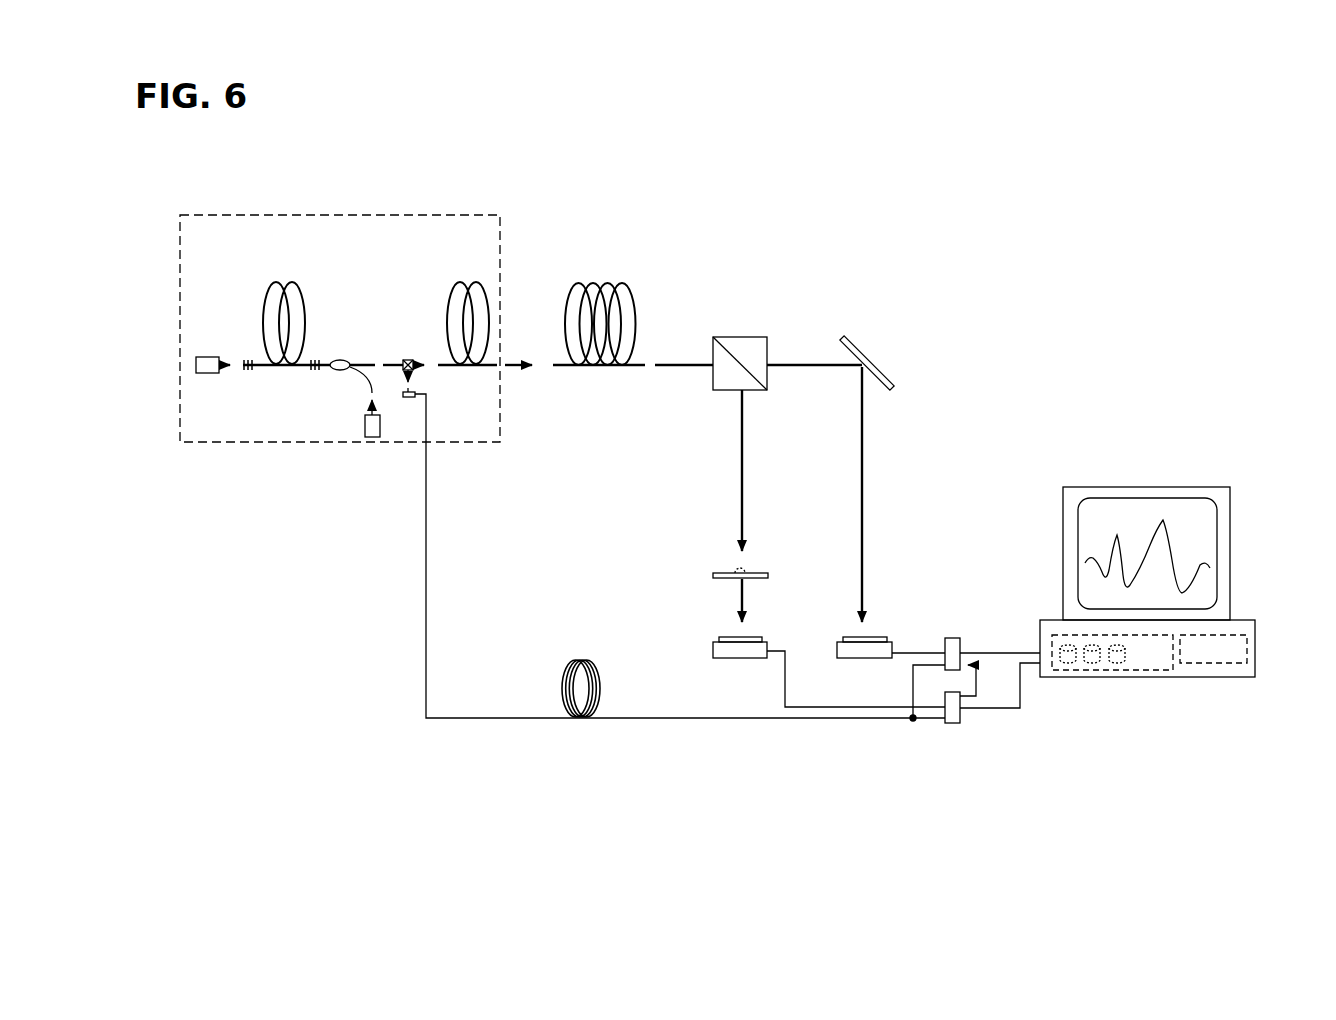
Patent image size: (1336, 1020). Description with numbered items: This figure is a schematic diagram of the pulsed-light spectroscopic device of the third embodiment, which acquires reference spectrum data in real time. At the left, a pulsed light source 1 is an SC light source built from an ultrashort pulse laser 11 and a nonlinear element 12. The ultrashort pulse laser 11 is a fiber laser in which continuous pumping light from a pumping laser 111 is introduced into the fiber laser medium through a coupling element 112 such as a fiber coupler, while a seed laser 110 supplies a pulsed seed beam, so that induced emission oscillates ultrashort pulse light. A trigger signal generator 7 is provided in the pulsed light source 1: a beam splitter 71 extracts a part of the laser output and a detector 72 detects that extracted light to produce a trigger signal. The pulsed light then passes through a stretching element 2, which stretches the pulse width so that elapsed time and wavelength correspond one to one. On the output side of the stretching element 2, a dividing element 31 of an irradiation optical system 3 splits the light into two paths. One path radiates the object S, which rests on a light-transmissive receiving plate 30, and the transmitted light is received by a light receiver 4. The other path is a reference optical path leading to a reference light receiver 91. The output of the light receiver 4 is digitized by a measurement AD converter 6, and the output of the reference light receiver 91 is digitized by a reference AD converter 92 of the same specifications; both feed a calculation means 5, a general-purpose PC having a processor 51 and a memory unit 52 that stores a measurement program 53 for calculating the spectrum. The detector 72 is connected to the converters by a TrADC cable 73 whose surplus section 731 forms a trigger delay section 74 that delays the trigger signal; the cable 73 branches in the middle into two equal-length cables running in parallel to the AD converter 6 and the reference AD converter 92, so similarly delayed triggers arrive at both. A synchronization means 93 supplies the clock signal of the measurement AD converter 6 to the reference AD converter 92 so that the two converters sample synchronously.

The pulsed light source 1 is at (352, 215).
The ultrashort pulse laser 11 is at (286, 272).
The nonlinear element 12 is at (471, 282).
The seed laser 110 is at (210, 355).
The pumping laser 111 is at (365, 422).
The coupling element 112 is at (342, 372).
The beam splitter 71 is at (408, 356).
The detector 72 is at (410, 400).
The trigger signal generator 7 is at (444, 406).
The TrADC cable 73 is at (470, 718).
The surplus section 731 is at (568, 662).
The trigger delay section 74 is at (561, 653).
The stretching element 2 is at (578, 250).
The irradiation optical system 3 is at (797, 439).
The dividing element 31 is at (745, 337).
The receiving plate 30 is at (714, 579).
The object S is at (749, 571).
The light receiver 4 is at (730, 659).
The reference light receiver 91 is at (853, 659).
The reference AD converter 92 is at (952, 638).
The synchronization means 93 is at (976, 682).
The AD converter 6 is at (955, 723).
The calculation means 5 is at (1154, 563).
The processor 51 is at (1213, 663).
The memory unit 52 is at (1112, 691).
The measurement program 53 is at (1067, 662).